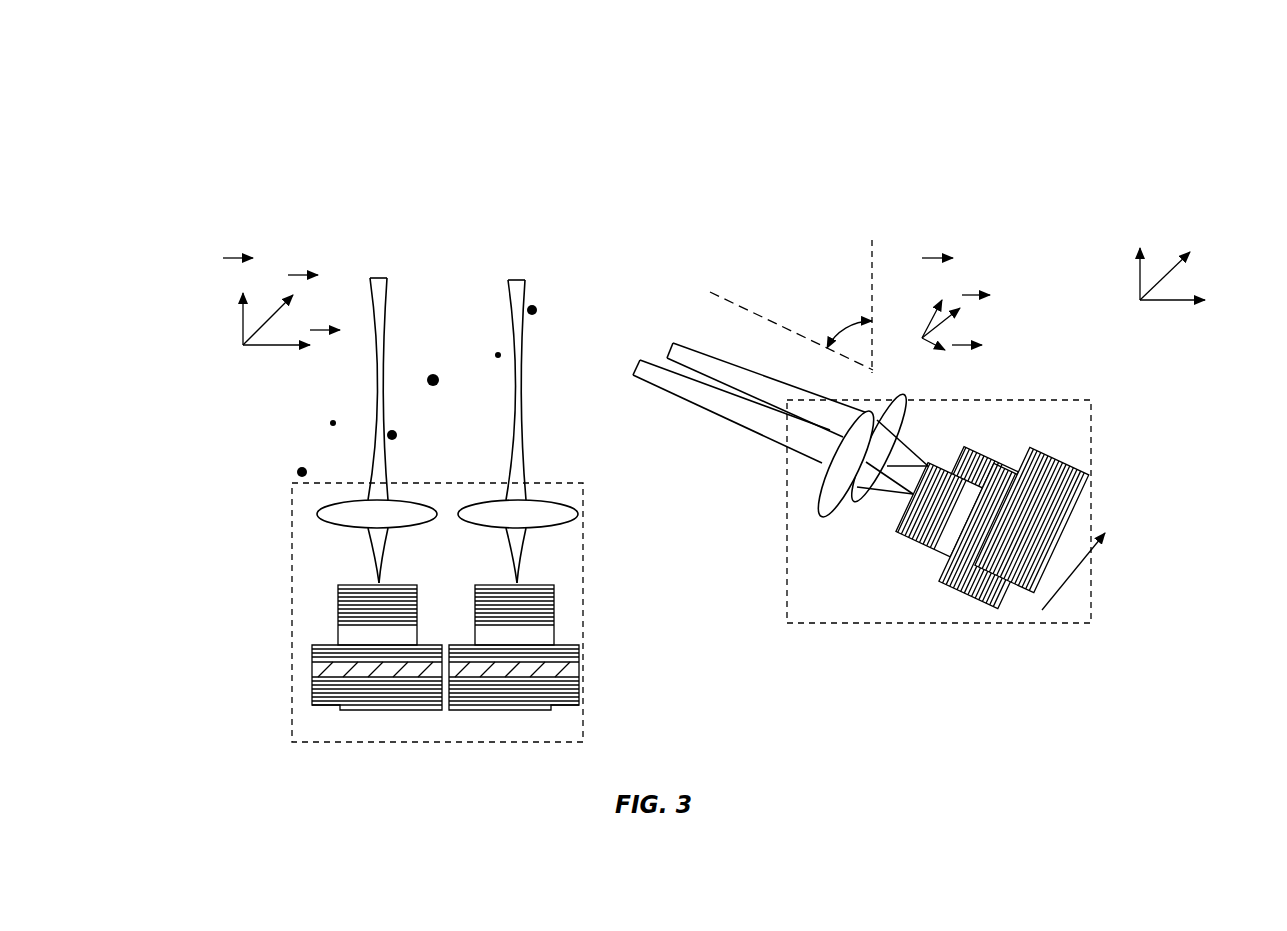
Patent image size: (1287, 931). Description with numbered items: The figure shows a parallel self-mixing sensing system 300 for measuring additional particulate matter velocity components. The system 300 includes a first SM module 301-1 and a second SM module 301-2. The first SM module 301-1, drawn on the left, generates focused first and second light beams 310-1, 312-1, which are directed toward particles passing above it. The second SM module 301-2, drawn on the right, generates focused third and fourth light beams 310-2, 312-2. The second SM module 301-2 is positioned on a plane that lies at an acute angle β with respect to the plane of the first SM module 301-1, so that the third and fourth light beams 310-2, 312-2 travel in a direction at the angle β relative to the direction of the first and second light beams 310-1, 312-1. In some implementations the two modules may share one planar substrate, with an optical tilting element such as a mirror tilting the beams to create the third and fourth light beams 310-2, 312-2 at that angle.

The parallel self-mixing sensing system 300 is at (216, 61).
The first SM module 301-1 is at (290, 625).
The second SM module 301-2 is at (1075, 396).
The first light beam 310-1 is at (372, 277).
The second light beam 312-1 is at (517, 279).
The third light beam 310-2 is at (658, 388).
The fourth light beam 312-2 is at (688, 349).